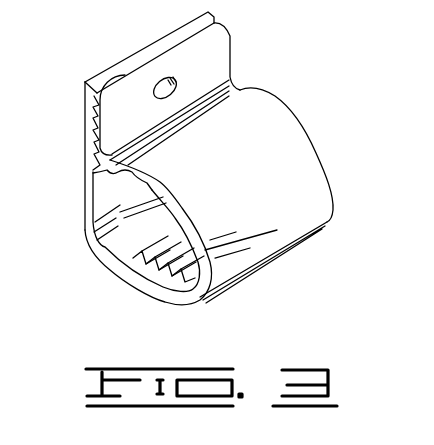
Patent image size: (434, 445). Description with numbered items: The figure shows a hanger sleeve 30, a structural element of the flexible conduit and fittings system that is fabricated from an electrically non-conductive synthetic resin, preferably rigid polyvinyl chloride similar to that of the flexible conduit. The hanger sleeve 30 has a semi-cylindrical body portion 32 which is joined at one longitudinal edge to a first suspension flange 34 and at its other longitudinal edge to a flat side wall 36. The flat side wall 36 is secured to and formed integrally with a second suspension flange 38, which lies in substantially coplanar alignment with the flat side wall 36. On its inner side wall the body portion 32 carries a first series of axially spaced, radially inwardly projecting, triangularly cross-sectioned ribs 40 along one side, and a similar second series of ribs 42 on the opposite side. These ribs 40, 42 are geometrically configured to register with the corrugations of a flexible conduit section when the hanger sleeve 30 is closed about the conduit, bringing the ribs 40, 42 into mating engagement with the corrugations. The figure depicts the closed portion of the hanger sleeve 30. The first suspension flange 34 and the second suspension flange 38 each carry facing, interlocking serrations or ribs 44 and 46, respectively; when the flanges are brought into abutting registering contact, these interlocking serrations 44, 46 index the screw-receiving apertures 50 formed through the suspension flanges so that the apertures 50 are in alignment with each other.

The hanger sleeve 30 is at (305, 133).
The body portion 32 is at (262, 201).
The first suspension flange 34 is at (224, 35).
The flat side wall 36 is at (85, 225).
The second suspension flange 38 is at (85, 117).
The first series of ribs 40 is at (153, 282).
The second series of ribs 42 is at (157, 182).
The interlocking serrations 44 is at (103, 125).
The interlocking serrations 46 is at (85, 93).
The screw-receiving apertures 50 is at (163, 86).